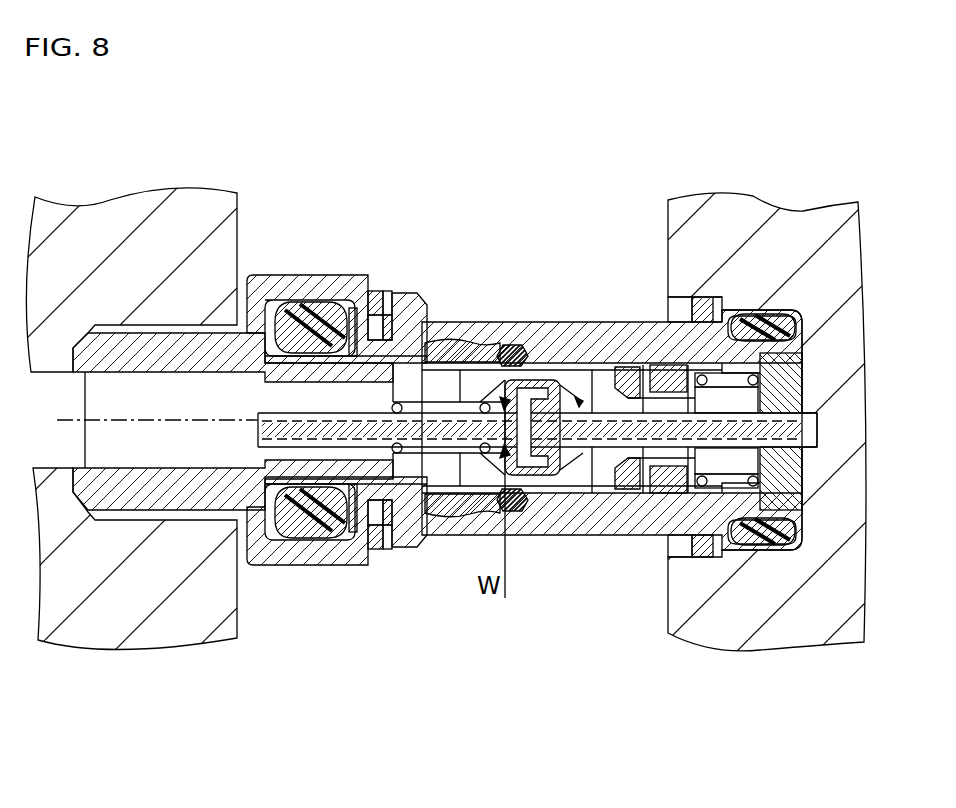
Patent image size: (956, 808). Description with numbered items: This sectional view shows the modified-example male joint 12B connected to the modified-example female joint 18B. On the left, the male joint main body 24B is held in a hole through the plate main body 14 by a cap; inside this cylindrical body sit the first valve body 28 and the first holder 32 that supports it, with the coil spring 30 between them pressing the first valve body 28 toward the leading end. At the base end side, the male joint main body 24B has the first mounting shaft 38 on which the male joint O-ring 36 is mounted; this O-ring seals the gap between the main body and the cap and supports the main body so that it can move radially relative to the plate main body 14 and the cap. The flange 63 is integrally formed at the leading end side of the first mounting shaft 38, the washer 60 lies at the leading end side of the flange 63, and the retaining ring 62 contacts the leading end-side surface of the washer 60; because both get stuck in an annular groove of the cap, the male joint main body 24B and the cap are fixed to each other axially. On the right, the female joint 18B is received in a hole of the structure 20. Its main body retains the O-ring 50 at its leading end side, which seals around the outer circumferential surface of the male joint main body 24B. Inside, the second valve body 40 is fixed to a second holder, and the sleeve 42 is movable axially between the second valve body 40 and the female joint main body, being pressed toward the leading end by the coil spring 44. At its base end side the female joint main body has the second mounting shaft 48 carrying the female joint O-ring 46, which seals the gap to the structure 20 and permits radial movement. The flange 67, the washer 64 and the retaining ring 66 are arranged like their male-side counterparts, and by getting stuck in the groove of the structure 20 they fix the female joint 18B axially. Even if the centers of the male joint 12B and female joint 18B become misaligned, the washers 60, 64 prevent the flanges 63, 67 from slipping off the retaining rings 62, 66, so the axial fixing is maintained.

The plate main body 14 is at (200, 208).
The male joint 12B is at (322, 270).
The flange 63 is at (376, 290).
The washer 60 is at (387, 290).
The retaining ring 62 is at (392, 300).
The male joint O-ring 36 is at (303, 300).
The first mounting shaft 38 is at (354, 306).
The first holder 32 is at (265, 388).
The coil spring 30 is at (458, 402).
The O-ring 50 is at (512, 355).
The male joint main body 24B is at (532, 338).
The second valve body 40 is at (560, 360).
The female joint 18B is at (626, 318).
The coil spring 44 is at (662, 362).
The retaining ring 66 is at (698, 297).
The flange 67 is at (710, 297).
The washer 64 is at (700, 296).
The second mounting shaft 48 is at (704, 296).
The female joint O-ring 46 is at (762, 313).
The structure 20 is at (816, 210).
The first valve body 28 is at (560, 477).
The sleeve 42 is at (640, 497).